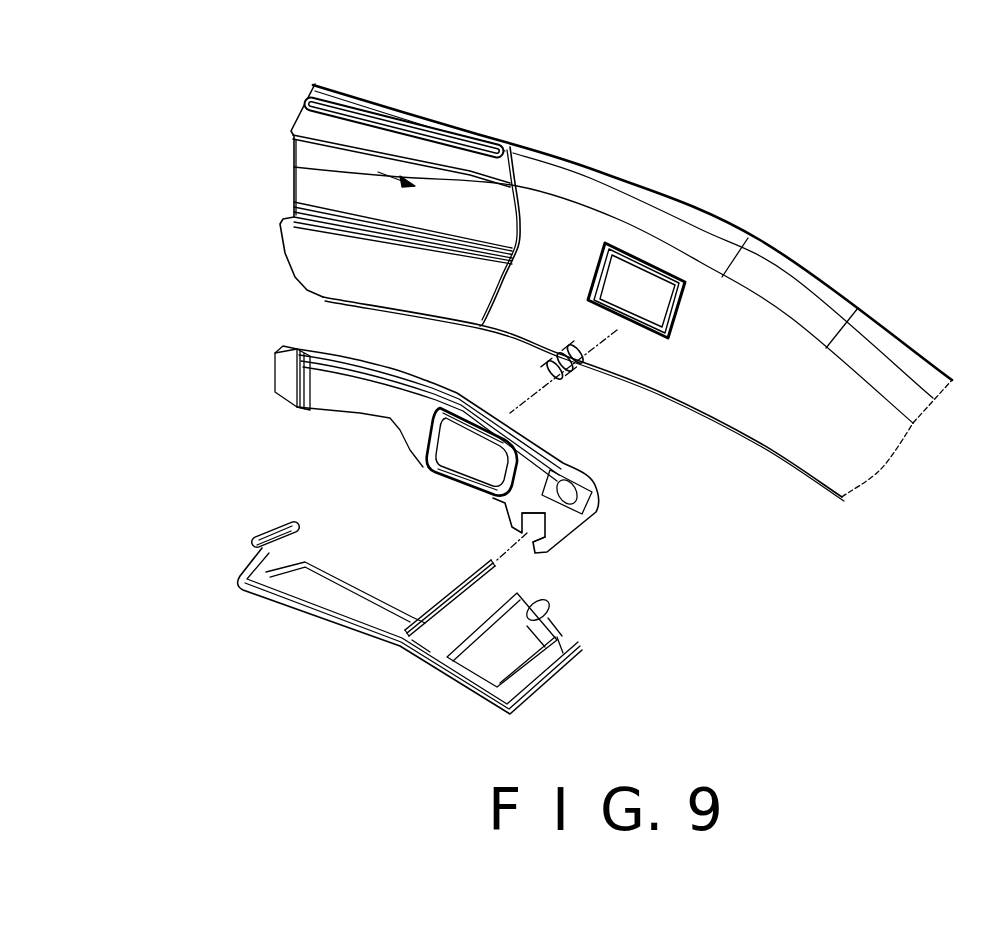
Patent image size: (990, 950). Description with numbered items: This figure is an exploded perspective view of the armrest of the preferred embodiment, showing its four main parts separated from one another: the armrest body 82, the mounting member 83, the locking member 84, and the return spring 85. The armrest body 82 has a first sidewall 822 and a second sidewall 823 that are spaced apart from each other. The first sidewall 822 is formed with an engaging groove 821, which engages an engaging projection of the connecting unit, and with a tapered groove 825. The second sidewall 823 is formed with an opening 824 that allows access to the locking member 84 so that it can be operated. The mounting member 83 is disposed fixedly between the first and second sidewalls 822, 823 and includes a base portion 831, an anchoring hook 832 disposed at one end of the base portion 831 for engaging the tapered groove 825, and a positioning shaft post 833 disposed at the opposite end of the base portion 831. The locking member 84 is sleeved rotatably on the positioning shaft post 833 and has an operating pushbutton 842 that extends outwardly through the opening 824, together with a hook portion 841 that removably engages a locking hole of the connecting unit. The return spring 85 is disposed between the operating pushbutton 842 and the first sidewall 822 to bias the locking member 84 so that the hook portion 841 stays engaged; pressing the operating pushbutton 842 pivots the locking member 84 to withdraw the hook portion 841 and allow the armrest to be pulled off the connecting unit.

The armrest body 82 is at (594, 149).
The engaging groove 821 is at (294, 167).
The first sidewall 822 is at (470, 130).
The second sidewall 823 is at (590, 235).
The opening 824 is at (665, 298).
The tapered groove 825 is at (360, 120).
The mounting member 83 is at (395, 622).
The base portion 831 is at (343, 613).
The anchoring hook 832 is at (258, 538).
The positioning shaft post 833 is at (495, 573).
The locking member 84 is at (412, 449).
The hook portion 841 is at (292, 386).
The operating pushbutton 842 is at (459, 473).
The return spring 85 is at (580, 378).